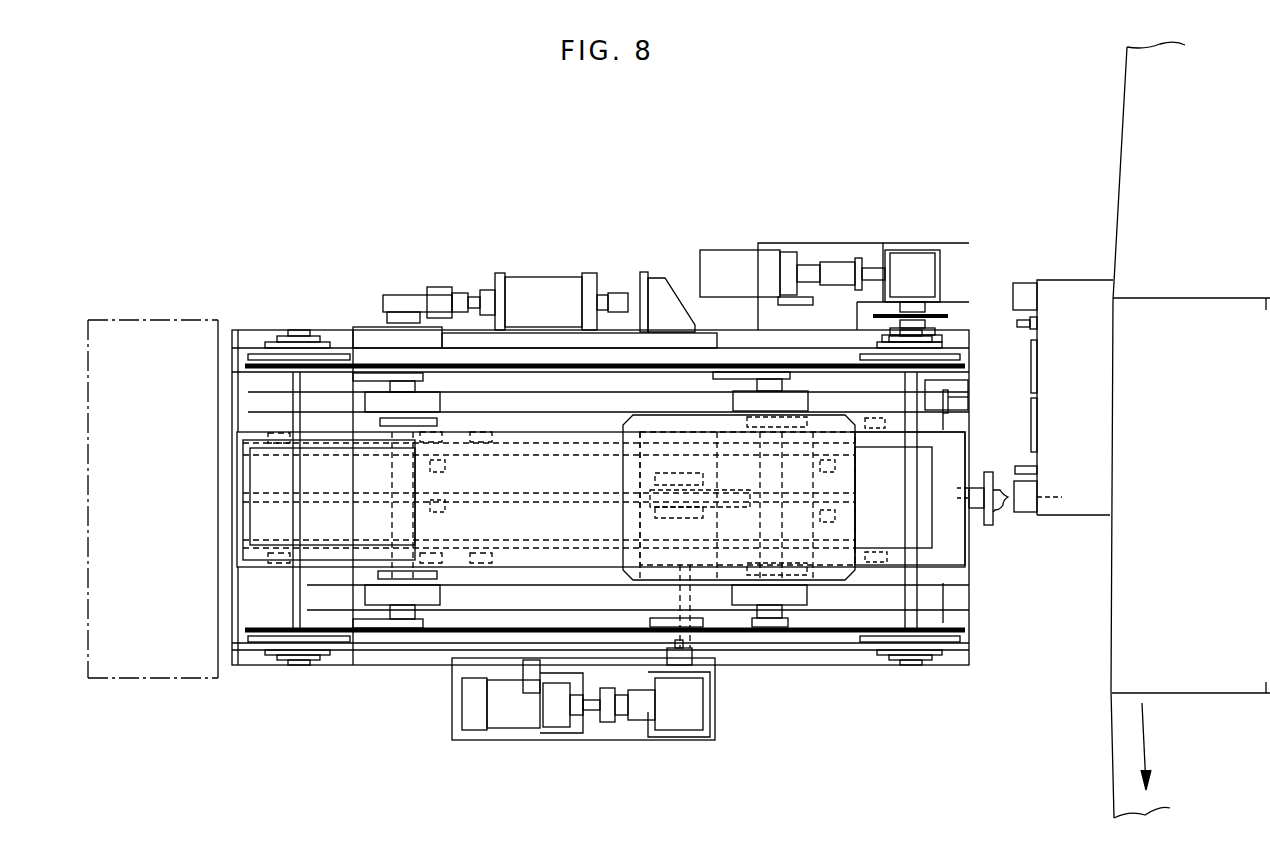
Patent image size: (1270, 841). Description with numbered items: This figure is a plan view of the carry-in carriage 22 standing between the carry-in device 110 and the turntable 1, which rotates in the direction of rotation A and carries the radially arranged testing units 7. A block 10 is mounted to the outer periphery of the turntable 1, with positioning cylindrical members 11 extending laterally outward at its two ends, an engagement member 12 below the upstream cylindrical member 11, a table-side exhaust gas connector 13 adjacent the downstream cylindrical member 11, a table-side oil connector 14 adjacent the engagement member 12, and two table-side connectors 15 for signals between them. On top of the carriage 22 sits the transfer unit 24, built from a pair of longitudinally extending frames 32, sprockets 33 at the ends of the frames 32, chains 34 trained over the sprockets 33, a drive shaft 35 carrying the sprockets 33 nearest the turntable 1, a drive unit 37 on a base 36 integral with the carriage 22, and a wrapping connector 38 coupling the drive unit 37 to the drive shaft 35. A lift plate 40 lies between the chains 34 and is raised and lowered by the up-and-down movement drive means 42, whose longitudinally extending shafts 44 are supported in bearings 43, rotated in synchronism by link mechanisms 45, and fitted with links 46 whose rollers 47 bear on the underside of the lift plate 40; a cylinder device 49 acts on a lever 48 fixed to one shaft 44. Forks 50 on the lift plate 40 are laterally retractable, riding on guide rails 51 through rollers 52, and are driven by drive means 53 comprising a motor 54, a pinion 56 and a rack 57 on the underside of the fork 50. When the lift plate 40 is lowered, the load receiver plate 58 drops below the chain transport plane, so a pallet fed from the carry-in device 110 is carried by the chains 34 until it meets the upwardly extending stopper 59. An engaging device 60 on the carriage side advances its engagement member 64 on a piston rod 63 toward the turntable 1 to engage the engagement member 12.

The turntable 1 is at (1130, 125).
The testing unit 7 is at (1248, 690).
The block 10 is at (1102, 364).
The positioning cylindrical member 11 is at (1028, 290).
The engagement member 12 is at (1063, 497).
The table-side exhaust gas connector 13 is at (1028, 320).
The table-side oil connector 14 is at (1025, 466).
The table-side connector 15 is at (1037, 375).
The carry-in carriage 22 is at (232, 610).
The transfer unit 24 is at (742, 632).
The frame 32 is at (372, 665).
The sprocket 33 is at (245, 368).
The chain 34 is at (712, 358).
The drive shaft 35 is at (912, 572).
The base 36 is at (945, 240).
The drive unit 37 is at (740, 250).
The wrapping connector 38 is at (940, 312).
The lift plate 40 is at (554, 499).
The up-and-down movement drive means 42 is at (535, 262).
The bearing 43 is at (440, 405).
The longitudinally extending shaft 44 is at (780, 360).
The link mechanism 45 is at (640, 375).
The link 46 is at (379, 424).
The roller 47 is at (642, 495).
The lever 48 is at (450, 312).
The cylinder device 49 is at (560, 297).
The fork 50 is at (255, 474).
The guide rail 51 is at (540, 440).
The roller 52 is at (895, 445).
The drive means 53 is at (640, 722).
The motor 54 is at (517, 720).
The pinion 56 is at (715, 490).
The rack 57 is at (711, 497).
The load receiver plate 58 is at (850, 500).
The stopper 59 is at (950, 392).
The engaging device 60 is at (977, 470).
The piston rod 63 is at (970, 498).
The engagement member 64 is at (1001, 512).
The carry-in device 110 is at (176, 302).
The direction of rotation A is at (1146, 760).